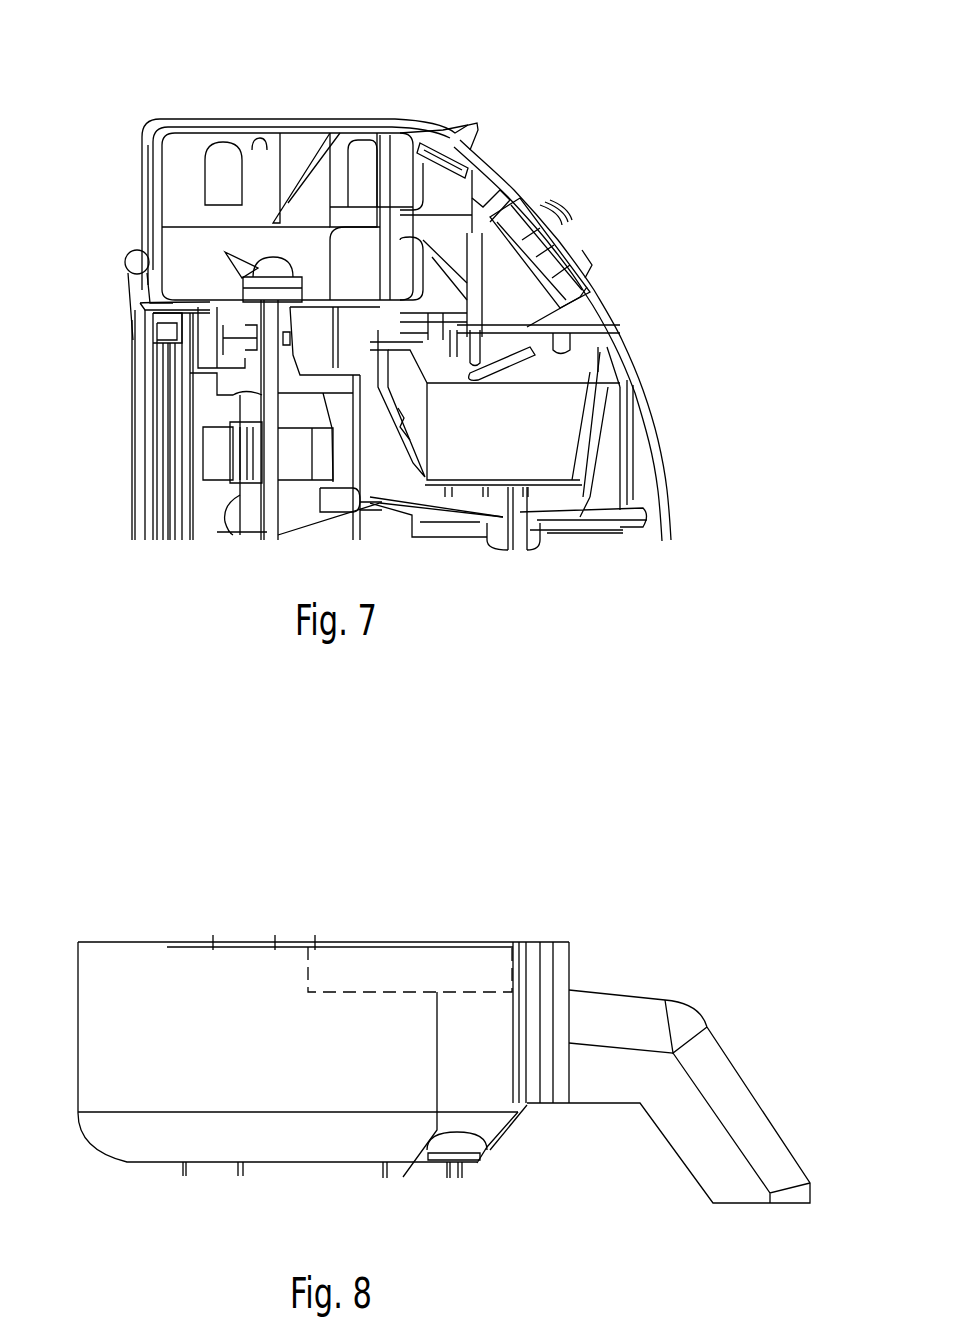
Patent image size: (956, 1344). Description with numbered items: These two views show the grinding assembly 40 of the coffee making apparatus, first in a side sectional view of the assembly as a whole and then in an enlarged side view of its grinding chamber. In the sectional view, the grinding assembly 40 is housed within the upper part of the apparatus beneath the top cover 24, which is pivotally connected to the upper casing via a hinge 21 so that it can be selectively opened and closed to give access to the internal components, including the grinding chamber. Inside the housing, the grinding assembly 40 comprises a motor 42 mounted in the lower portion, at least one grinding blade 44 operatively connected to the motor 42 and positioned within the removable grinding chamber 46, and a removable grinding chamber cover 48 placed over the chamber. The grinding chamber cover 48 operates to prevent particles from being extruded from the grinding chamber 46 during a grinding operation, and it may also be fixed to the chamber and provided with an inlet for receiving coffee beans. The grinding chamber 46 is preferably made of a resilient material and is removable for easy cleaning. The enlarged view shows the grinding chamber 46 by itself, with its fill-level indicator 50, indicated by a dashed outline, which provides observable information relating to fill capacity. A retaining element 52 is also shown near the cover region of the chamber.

In FIG. 7, the grinding assembly 40 is at (677, 62).
In FIG. 7, the top cover 24 is at (245, 118).
In FIG. 7, the grinding chamber cover 48 is at (163, 162).
In FIG. 7, the grinding chamber 46 is at (160, 240).
In FIG. 8, the grinding chamber 46 is at (667, 950).
In FIG. 7, the retaining element 52 is at (295, 153).
In FIG. 7, the hinge 21 is at (137, 267).
In FIG. 7, the grinding blade 44 is at (237, 268).
In FIG. 7, the motor 42 is at (233, 453).
In FIG. 8, the fill-level indicator 50 is at (482, 997).